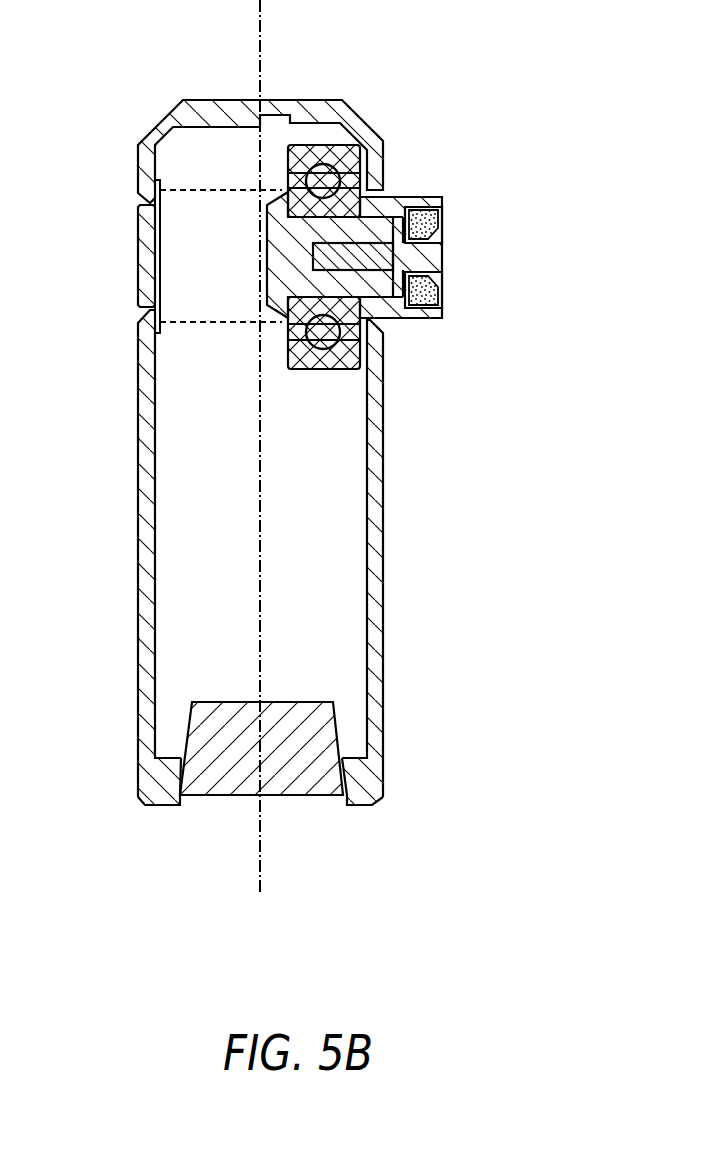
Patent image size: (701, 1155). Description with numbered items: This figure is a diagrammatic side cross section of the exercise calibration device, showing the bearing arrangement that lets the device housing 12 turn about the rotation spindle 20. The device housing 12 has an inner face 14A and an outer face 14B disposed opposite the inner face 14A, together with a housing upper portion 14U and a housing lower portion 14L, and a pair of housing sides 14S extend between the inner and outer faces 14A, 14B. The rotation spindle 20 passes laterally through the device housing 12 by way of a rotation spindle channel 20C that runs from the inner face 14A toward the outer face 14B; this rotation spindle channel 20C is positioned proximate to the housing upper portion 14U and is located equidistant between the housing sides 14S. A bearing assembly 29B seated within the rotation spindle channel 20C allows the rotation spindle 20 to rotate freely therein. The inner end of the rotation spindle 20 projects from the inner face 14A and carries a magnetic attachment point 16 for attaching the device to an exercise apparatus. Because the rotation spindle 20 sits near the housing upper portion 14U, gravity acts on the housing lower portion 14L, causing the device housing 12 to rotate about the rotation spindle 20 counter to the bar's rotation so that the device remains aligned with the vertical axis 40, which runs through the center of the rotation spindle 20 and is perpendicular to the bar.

The device housing 12 is at (282, 446).
The housing upper portion 14U is at (290, 100).
The bearing assembly 29B is at (336, 145).
The rotation spindle channel 20C is at (382, 195).
The rotation spindle 20 is at (396, 215).
The magnetic attachment point 16 is at (442, 297).
The outer face 14B is at (138, 548).
The inner face 14A is at (383, 580).
The housing sides 14S is at (172, 725).
The housing lower portion 14L is at (358, 807).
The vertical axis 40 is at (260, 850).